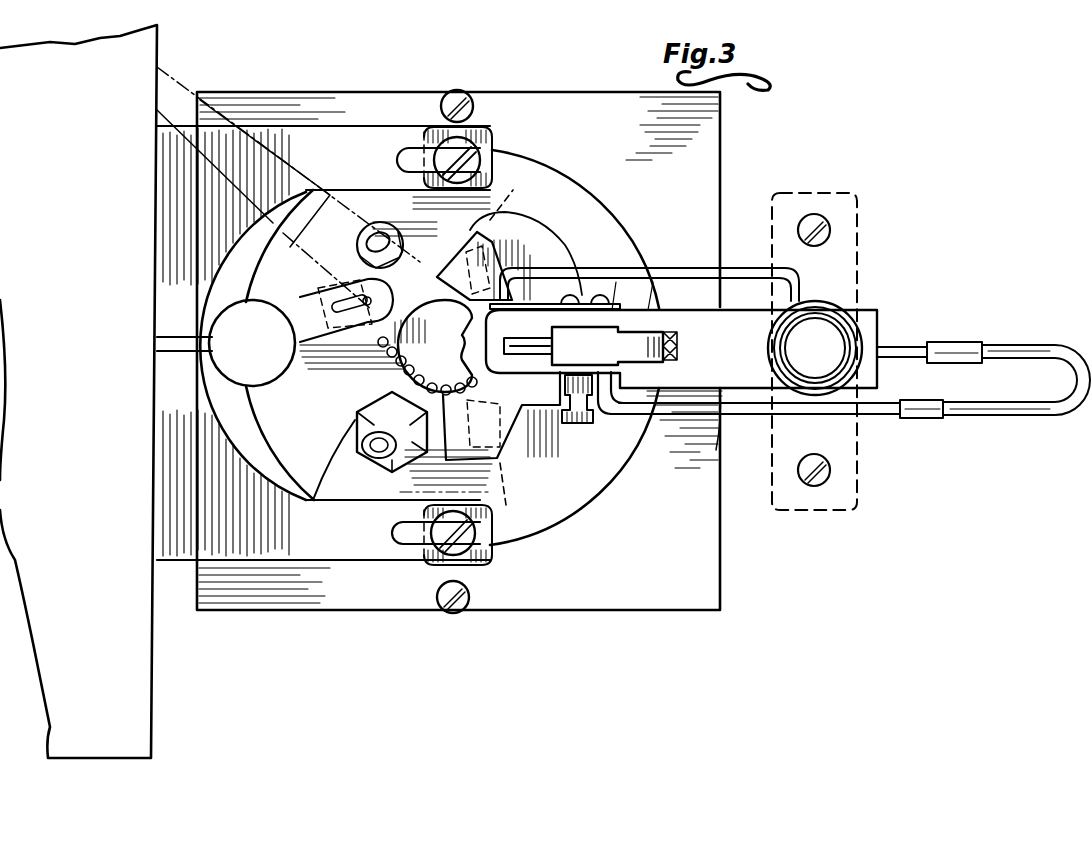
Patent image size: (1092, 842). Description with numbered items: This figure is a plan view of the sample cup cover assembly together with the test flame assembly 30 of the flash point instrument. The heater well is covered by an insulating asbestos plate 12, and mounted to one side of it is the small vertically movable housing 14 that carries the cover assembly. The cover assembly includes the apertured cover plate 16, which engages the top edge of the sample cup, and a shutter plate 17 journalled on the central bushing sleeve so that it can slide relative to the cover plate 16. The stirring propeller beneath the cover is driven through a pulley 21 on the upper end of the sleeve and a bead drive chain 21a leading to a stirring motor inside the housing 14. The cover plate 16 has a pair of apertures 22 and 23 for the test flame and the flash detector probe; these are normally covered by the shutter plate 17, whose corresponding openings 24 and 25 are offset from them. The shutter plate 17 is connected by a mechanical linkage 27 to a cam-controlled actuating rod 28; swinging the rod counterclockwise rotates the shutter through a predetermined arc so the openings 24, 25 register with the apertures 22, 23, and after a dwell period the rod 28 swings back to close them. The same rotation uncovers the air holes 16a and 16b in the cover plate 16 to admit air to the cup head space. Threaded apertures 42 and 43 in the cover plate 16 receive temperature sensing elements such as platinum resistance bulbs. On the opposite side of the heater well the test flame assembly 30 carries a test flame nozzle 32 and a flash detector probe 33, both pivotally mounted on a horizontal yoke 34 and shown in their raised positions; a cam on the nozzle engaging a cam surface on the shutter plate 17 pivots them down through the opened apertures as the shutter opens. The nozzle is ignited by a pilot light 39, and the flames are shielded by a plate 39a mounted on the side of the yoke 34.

The insulating asbestos plate 12 is at (556, 618).
The vertically movable housing 14 is at (151, 636).
The apertured cover plate 16 is at (307, 393).
The air hole 16a is at (562, 203).
The air hole 16b is at (543, 531).
The shutter plate 17 is at (500, 195).
The pulley 21 is at (437, 277).
The bead drive chain 21a is at (383, 350).
The aperture 22 is at (465, 333).
The aperture 23 is at (470, 373).
The opening 24 is at (531, 391).
The opening 25 is at (420, 470).
The mechanical linkage 27 is at (310, 295).
The cam-controlled actuating rod 28 is at (170, 352).
The test flame assembly 30 is at (681, 260).
The test flame nozzle 32 is at (580, 292).
The flash detector probe 33 is at (547, 392).
The horizontal yoke 34 is at (722, 418).
The pilot light 39 is at (507, 313).
The shield plate 39a is at (520, 310).
The threaded aperture 42 is at (378, 222).
The threaded aperture 43 is at (311, 498).